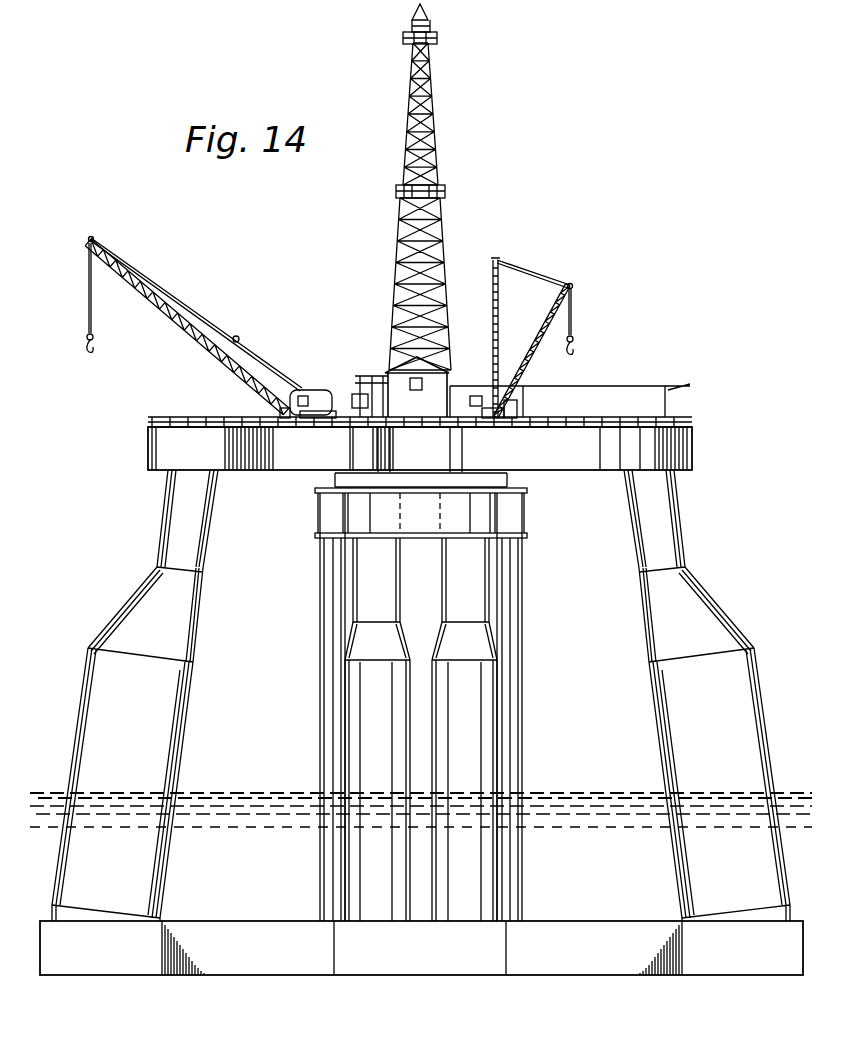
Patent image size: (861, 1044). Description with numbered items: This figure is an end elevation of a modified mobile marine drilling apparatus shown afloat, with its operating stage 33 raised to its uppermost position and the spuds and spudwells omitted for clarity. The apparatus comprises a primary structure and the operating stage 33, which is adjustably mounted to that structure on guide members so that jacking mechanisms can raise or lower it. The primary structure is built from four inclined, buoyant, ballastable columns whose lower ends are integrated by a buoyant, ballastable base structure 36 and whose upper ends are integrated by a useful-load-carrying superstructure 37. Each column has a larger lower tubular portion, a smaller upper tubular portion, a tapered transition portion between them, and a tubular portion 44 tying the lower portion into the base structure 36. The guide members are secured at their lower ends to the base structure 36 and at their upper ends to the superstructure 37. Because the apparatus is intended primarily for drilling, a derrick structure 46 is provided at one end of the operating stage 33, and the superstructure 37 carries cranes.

The operating stage 33 is at (525, 518).
The base structure 36 is at (421, 925).
The useful-load-carrying superstructure 37 is at (695, 455).
The tubular portion 44 is at (52, 905).
The derrick structure 46 is at (444, 234).